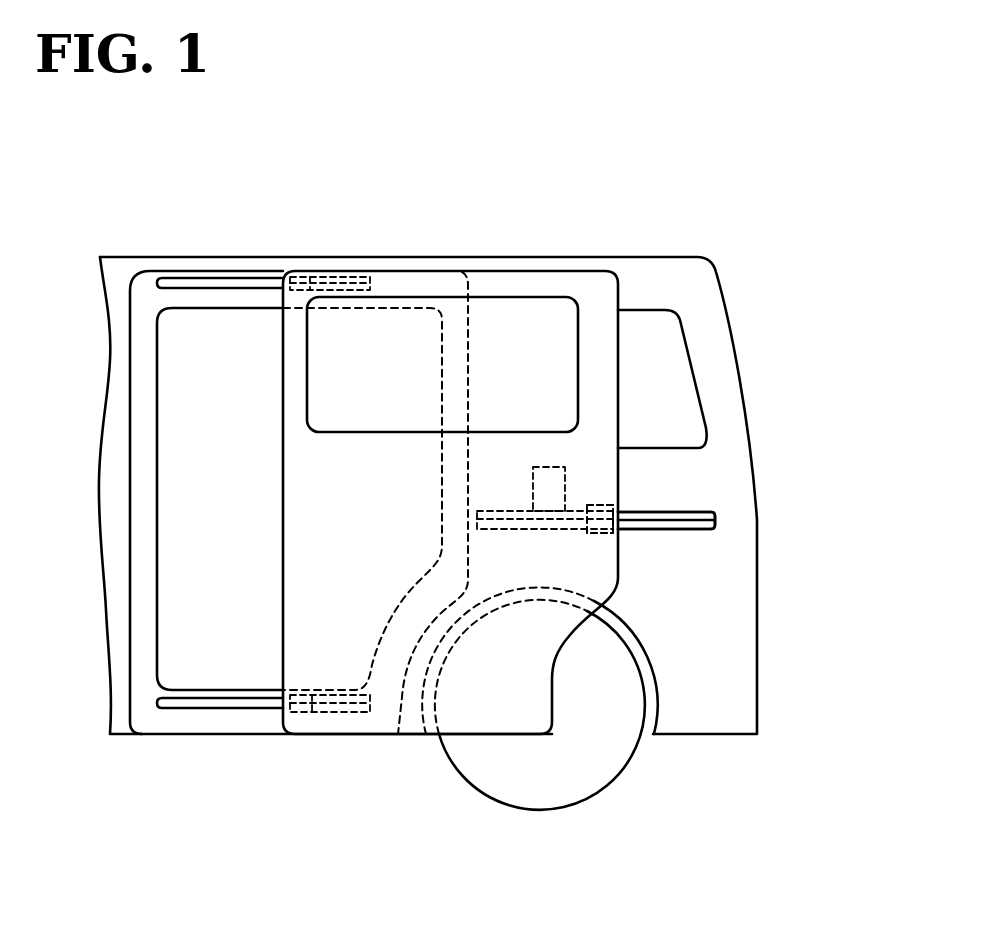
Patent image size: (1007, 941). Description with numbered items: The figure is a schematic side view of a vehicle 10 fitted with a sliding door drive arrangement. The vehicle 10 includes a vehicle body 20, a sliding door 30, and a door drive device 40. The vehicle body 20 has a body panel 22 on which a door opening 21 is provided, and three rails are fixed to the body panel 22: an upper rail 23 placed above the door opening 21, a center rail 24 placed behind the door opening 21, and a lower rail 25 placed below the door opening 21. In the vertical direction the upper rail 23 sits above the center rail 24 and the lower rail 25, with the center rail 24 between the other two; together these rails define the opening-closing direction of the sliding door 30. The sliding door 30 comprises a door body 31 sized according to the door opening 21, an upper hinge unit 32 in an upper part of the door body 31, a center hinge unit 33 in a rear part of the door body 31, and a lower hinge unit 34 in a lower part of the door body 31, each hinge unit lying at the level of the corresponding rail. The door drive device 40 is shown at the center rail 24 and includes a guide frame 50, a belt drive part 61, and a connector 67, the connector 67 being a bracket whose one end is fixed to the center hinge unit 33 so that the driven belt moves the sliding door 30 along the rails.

The vehicle 10 is at (822, 199).
The vehicle body 20 is at (650, 256).
The door opening 21 is at (173, 567).
The body panel 22 is at (697, 615).
The upper rail 23 is at (206, 278).
The center rail 24 is at (708, 530).
The lower rail 25 is at (170, 710).
The sliding door 30 is at (469, 471).
The door body 31 is at (283, 552).
The upper hinge unit 32 is at (303, 275).
The center hinge unit 33 is at (605, 503).
The lower hinge unit 34 is at (298, 695).
The door drive device 40 is at (717, 510).
The guide frame 50 is at (506, 511).
The belt drive part 61 is at (546, 467).
The connector 67 is at (600, 519).